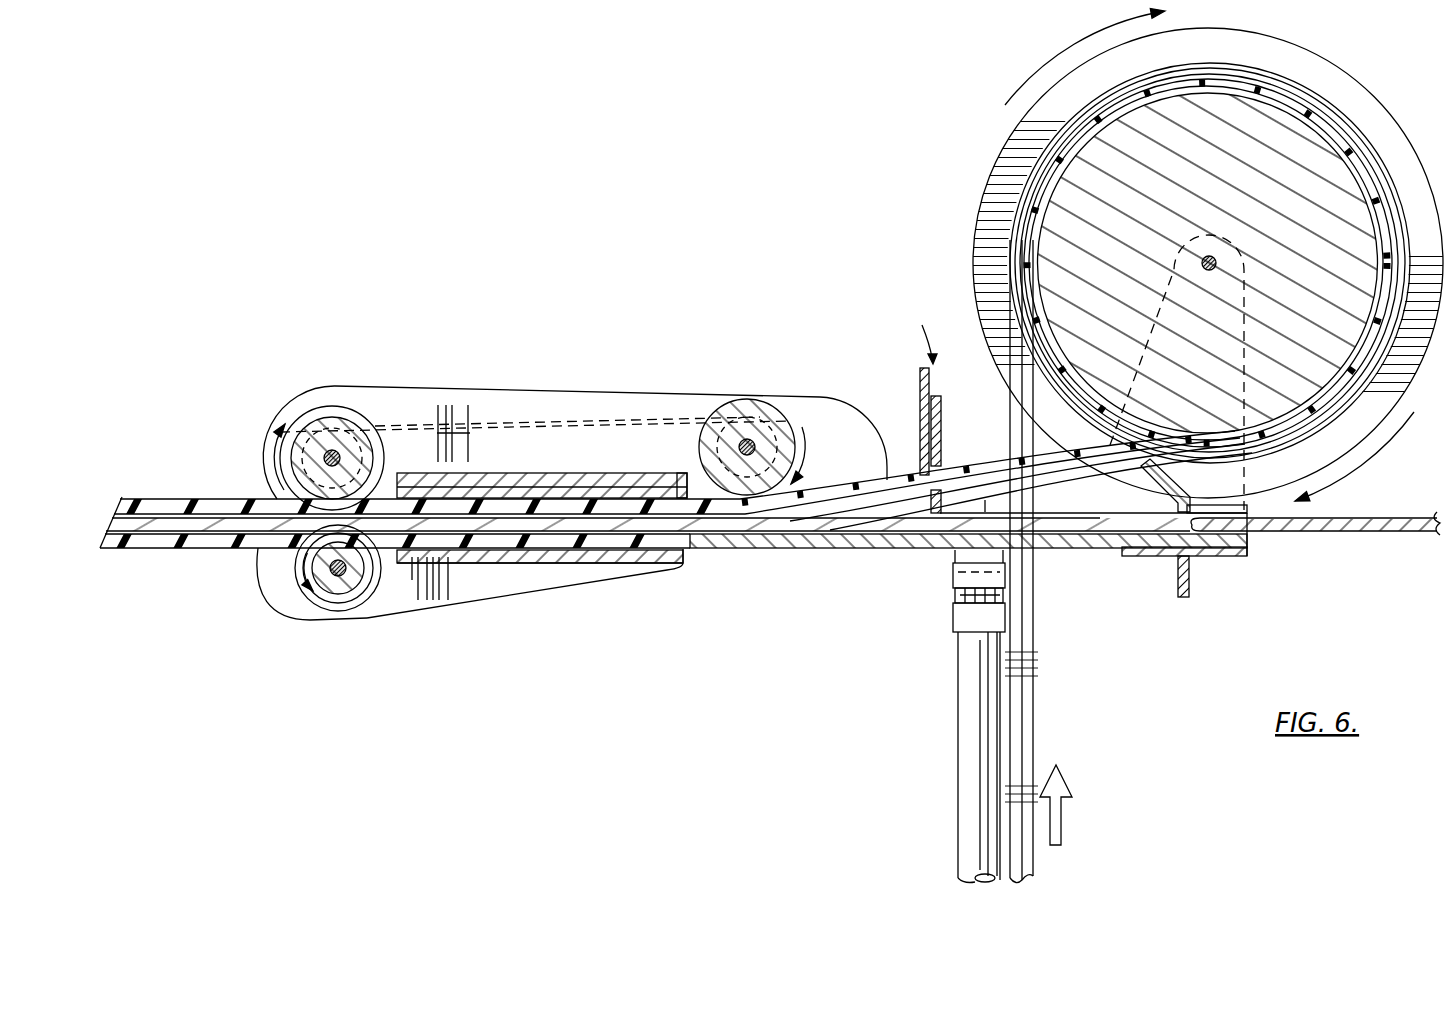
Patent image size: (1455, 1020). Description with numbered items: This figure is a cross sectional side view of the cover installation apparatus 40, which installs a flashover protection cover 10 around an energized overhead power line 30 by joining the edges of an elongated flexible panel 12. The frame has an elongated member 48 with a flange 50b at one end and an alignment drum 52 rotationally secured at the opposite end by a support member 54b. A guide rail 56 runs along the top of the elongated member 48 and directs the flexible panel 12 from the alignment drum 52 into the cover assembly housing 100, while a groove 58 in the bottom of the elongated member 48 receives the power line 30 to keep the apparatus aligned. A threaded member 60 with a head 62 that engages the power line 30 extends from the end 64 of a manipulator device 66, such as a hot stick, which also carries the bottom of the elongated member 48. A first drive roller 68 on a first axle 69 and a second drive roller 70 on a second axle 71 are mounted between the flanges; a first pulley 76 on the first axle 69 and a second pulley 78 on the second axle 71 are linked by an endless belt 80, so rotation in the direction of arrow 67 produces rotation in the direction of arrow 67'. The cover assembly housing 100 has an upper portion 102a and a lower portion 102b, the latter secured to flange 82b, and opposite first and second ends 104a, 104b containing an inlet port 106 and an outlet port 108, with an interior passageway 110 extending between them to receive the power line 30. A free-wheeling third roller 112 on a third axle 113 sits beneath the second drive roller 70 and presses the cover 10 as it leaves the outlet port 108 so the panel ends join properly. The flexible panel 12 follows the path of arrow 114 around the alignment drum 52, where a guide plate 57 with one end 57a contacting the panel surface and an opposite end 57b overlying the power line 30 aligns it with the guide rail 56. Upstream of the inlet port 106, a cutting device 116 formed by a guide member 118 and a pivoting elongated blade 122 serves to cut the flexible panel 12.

The flashover protection cover 10 is at (160, 497).
The elongated flexible panel 12 is at (1030, 882).
The power line 30 is at (1375, 520).
The cover installation apparatus 40 is at (906, 148).
The elongated member 48 is at (769, 548).
The flange 50b is at (305, 385).
The alignment drum 52 is at (1372, 94).
The support member 54b is at (1388, 435).
The guide rail 56 is at (987, 510).
The guide plate 57 is at (1182, 478).
The end of guide plate 57a is at (1148, 463).
The opposite end of guide plate 57b is at (1245, 540).
The groove 58 is at (865, 541).
The threaded member 60 is at (960, 596).
The head 62 is at (955, 578).
The end of manipulator device 64 is at (960, 617).
The manipulator device 66 is at (968, 777).
The arrow 67 is at (823, 454).
The arrow 67' is at (248, 446).
The first drive roller 68 is at (752, 405).
The first axle 69 is at (760, 440).
The second drive roller 70 is at (335, 418).
The second axle 71 is at (367, 443).
The first pulley 76 is at (700, 446).
The second pulley 78 is at (432, 402).
The endless belt 80 is at (505, 398).
The flange 82b is at (282, 597).
The cover assembly housing 100 is at (546, 562).
The upper portion of cover assembly housing 102a is at (510, 565).
The lower portion of cover assembly housing 102b is at (498, 483).
The first end of cover assembly housing 104a is at (690, 563).
The second end of cover assembly housing 104b is at (400, 614).
The inlet port 106 is at (684, 474).
The outlet port 108 is at (383, 600).
The interior passageway 110 is at (608, 495).
The third roller 112 is at (325, 602).
The third axle 113 is at (305, 560).
The arrow 114 is at (1057, 823).
The cutting device 116 is at (918, 327).
The guide member 118 is at (938, 425).
The elongated blade 122 is at (920, 395).